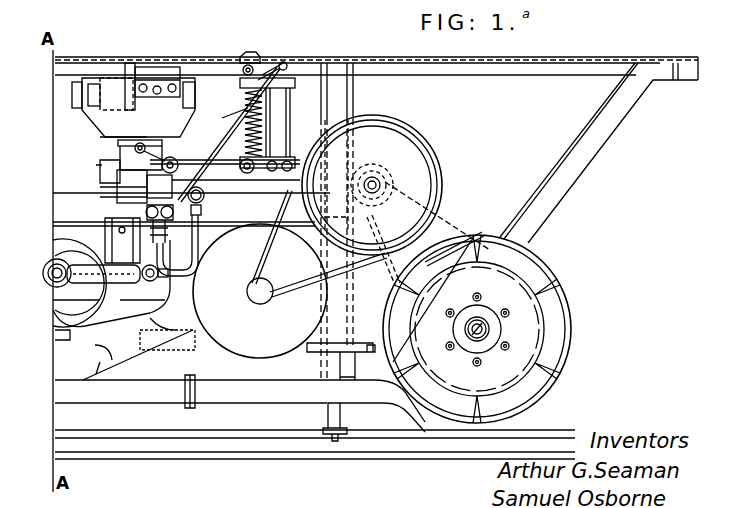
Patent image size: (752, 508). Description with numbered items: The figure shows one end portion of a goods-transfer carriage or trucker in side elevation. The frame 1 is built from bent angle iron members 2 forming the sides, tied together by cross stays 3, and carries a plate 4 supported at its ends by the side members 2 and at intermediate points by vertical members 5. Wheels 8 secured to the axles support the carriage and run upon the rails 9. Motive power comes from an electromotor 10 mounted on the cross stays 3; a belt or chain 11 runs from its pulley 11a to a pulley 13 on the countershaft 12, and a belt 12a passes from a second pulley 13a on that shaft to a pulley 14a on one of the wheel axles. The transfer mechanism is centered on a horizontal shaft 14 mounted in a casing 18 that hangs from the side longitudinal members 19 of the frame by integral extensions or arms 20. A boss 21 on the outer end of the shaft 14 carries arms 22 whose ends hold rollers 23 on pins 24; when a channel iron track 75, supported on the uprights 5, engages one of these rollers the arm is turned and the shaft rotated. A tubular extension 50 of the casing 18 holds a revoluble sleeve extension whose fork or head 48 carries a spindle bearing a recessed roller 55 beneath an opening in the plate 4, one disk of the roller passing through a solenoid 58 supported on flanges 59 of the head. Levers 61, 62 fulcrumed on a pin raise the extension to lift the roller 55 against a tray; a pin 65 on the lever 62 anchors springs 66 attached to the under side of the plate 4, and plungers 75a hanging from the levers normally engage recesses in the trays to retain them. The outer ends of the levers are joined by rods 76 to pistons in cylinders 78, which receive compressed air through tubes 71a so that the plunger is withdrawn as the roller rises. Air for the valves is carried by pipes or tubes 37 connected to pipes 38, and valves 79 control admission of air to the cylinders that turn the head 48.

The frame 1 is at (345, 97).
The angle iron members 2 is at (461, 231).
The cross stays 3 is at (195, 392).
The plate 4 is at (585, 58).
The vertical members 5 is at (341, 221).
The wheels 8 is at (557, 353).
The rails 9 is at (543, 430).
The electromotor 10 is at (260, 291).
The belt or chain 11 is at (300, 296).
The pulley 11a is at (273, 286).
The countershaft 12 is at (381, 183).
The belt 12a is at (462, 232).
The pulley 13 is at (428, 142).
The second pulley 13a is at (428, 233).
The shaft 14 is at (54, 277).
The pulley 14a is at (547, 317).
The casing 18 is at (79, 275).
The side longitudinal members 19 is at (191, 209).
The extensions or arms 20 is at (122, 240).
The boss 21 is at (103, 273).
The arms 22 is at (103, 272).
The rollers 23 is at (146, 280).
The pins 24 is at (151, 281).
The pipes or tubes 37 is at (199, 192).
The pipes 38 is at (199, 250).
The fork or head 48 is at (133, 107).
The tubular extension 50 is at (117, 186).
The roller 55 is at (129, 66).
The solenoid 58 is at (170, 76).
The flanges 59 is at (118, 143).
The lever 61 is at (160, 156).
The lever 62 is at (222, 160).
The pin 65 is at (247, 174).
The spring 66 is at (240, 112).
The tubes 71a is at (286, 64).
The track 75 is at (257, 223).
The plungers 75a is at (256, 57).
The rods 76 is at (272, 123).
The cylinders 78 is at (229, 134).
The valves 79 is at (159, 209).